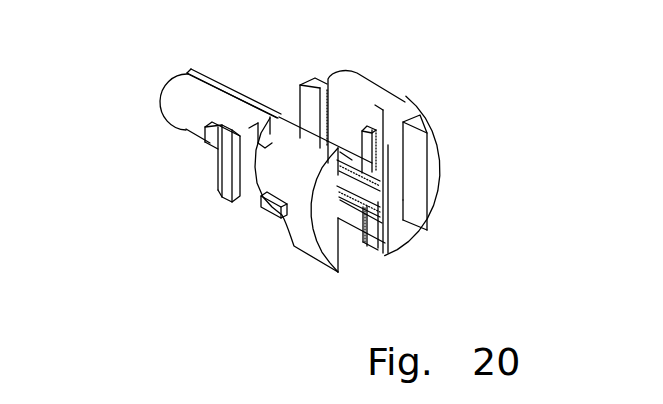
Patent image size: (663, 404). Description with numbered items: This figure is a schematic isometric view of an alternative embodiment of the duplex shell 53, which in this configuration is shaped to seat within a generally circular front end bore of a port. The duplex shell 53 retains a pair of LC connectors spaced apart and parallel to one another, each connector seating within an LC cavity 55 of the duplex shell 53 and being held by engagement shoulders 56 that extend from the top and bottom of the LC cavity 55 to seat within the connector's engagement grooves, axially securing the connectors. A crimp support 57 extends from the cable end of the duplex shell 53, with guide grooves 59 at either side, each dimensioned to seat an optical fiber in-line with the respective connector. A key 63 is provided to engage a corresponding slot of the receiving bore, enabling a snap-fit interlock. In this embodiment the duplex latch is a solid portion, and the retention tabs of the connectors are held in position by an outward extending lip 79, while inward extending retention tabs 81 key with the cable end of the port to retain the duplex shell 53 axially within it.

The duplex shell 53 is at (371, 91).
The LC cavity 55 is at (353, 160).
The engagement shoulders 56 is at (373, 227).
The crimp support 57 is at (190, 102).
The guide grooves 59 is at (219, 92).
The key 63 is at (276, 214).
The outward extending lip 79 is at (424, 178).
The inward extending retention tabs 81 is at (230, 177).